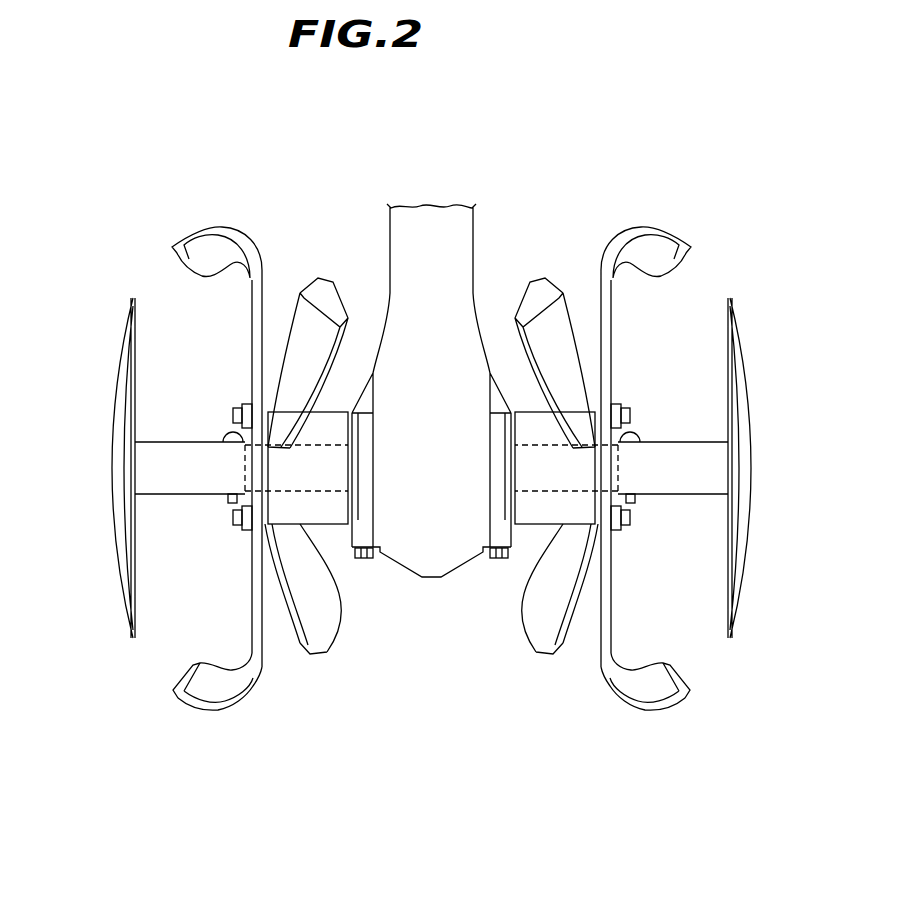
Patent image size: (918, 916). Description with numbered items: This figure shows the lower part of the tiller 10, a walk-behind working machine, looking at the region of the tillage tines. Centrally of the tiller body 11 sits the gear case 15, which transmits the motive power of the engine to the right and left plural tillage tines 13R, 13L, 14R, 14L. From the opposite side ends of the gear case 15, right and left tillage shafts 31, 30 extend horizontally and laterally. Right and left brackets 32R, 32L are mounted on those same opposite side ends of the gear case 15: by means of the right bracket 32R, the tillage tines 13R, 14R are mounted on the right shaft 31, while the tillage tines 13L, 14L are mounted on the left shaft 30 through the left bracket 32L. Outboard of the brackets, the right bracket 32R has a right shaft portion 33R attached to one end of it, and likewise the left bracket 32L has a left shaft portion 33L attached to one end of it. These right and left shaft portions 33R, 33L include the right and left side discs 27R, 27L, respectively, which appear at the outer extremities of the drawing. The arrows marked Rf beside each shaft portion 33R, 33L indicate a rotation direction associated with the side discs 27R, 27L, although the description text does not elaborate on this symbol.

The tiller 10 is at (176, 142).
The tiller body 11 is at (461, 162).
The right tillage tine 13R is at (305, 280).
The left tillage tine 13L is at (550, 278).
The right tillage tine 14R is at (182, 228).
The left tillage tine 14L is at (663, 223).
The gear case 15 is at (473, 245).
The right side disc 27R is at (120, 373).
The left side disc 27L is at (743, 363).
The left tillage shaft 30 is at (548, 443).
The right tillage shaft 31 is at (310, 443).
The right bracket 32R is at (333, 527).
The left bracket 32L is at (530, 527).
The right shaft portion 33R is at (170, 497).
The left shaft portion 33L is at (700, 495).
The rotation direction Rf is at (216, 427).